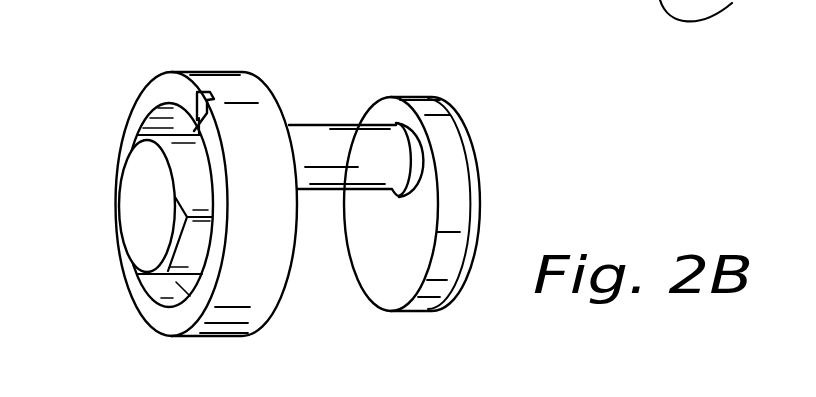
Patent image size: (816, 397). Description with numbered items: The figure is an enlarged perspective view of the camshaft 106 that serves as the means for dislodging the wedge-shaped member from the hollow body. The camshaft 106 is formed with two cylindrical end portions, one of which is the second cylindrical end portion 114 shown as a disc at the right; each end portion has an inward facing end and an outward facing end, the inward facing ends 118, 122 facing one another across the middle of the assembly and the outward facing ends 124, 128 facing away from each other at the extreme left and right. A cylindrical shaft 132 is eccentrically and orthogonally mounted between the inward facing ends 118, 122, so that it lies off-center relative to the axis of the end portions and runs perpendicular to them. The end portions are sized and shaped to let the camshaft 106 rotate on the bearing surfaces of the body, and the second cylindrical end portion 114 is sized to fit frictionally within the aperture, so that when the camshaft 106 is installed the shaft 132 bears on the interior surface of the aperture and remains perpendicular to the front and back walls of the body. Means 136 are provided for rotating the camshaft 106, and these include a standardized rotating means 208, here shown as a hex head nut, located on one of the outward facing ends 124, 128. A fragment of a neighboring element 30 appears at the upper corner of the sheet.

The assembly 30 is at (717, 10).
The camshaft 106 is at (222, 208).
The second cylindrical end portion 114 is at (453, 221).
The inward facing end 118 is at (278, 97).
The inward facing end 122 is at (387, 287).
The outward facing end 124 is at (180, 322).
The outward facing end 128 is at (478, 236).
The cylindrical shaft 132 is at (343, 143).
The means for rotating the camshaft 136 is at (152, 238).
The standardized rotating means 208 is at (133, 168).